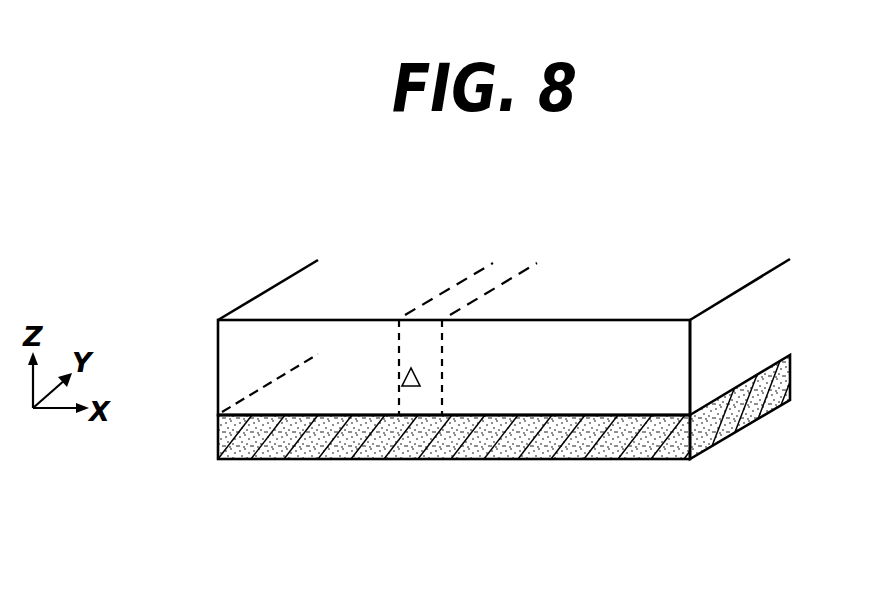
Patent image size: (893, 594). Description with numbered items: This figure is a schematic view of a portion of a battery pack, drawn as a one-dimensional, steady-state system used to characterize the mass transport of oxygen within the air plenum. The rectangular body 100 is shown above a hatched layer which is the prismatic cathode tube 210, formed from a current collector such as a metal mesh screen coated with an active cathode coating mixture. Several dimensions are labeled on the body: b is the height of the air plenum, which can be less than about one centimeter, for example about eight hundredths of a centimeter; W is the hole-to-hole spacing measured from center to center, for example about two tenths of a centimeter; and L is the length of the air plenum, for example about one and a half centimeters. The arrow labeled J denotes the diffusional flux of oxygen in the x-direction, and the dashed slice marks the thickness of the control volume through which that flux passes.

The magnetic element body 100 is at (538, 301).
The prismatic cathode tube 210 is at (632, 460).
The hole-to-hole spacing W is at (262, 290).
The length of air plenum L is at (454, 399).
The height of air plenum b is at (702, 367).
The diffusional flux of oxygen J is at (278, 371).